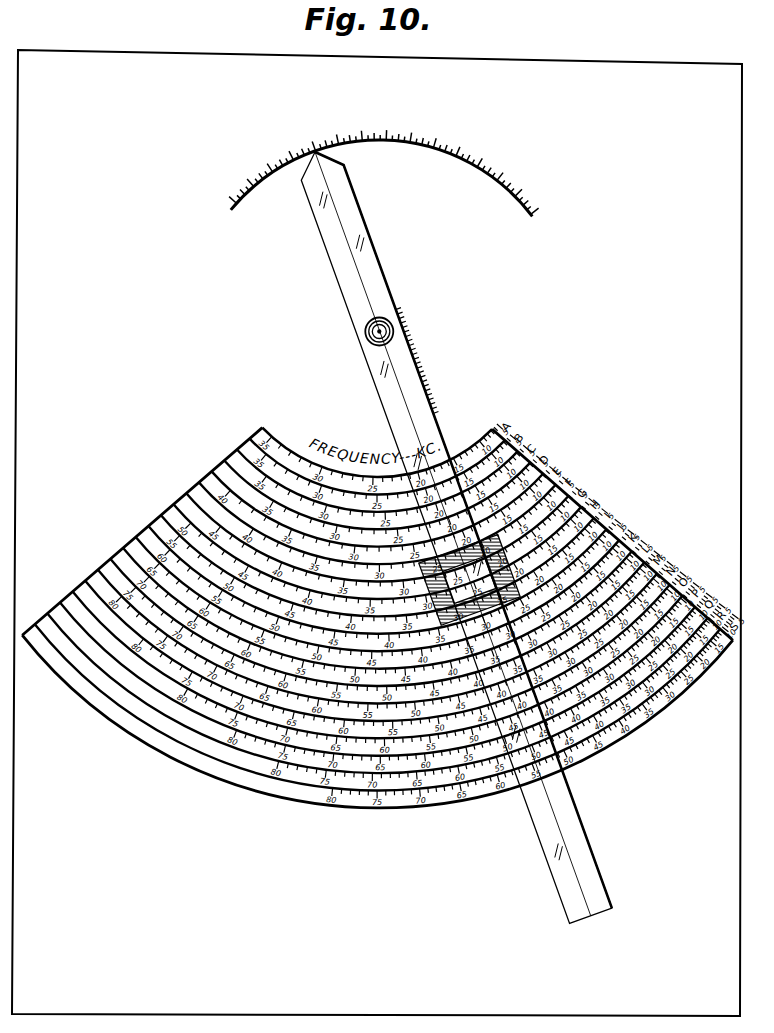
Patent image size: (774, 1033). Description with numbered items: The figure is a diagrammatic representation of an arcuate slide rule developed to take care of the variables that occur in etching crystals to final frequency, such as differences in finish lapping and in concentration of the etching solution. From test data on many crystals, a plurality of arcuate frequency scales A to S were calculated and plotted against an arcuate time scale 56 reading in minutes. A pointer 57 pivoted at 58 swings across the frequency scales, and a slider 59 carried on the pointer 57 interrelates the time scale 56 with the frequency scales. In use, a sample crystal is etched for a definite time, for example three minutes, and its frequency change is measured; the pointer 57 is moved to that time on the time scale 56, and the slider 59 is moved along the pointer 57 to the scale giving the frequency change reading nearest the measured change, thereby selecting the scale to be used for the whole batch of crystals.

The time scale 56 is at (501, 192).
The pointer 57 is at (395, 306).
The pivot 58 is at (366, 334).
The slider 59 is at (500, 532).